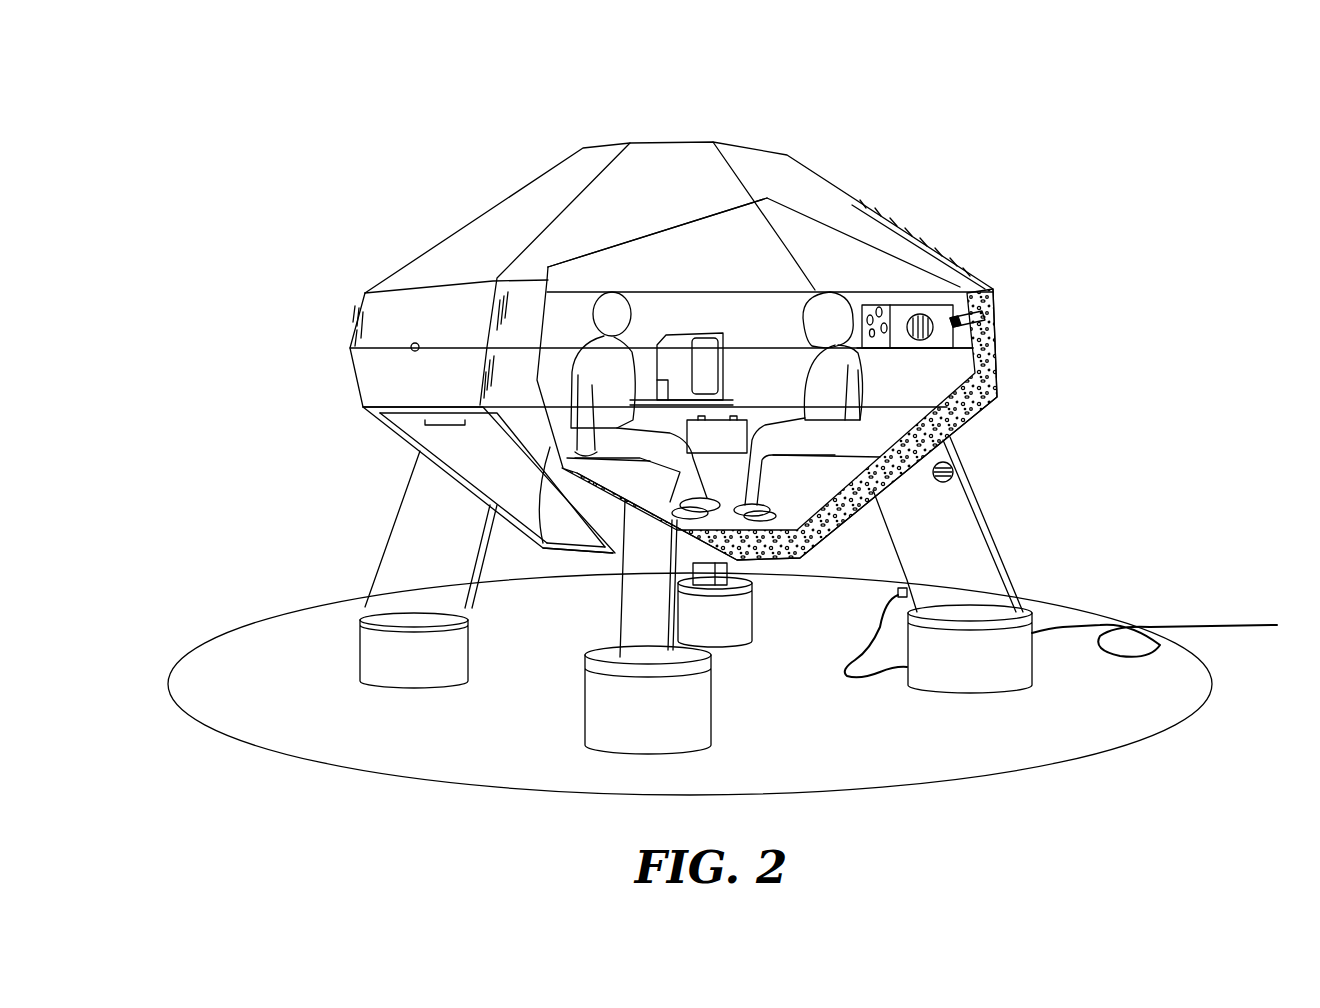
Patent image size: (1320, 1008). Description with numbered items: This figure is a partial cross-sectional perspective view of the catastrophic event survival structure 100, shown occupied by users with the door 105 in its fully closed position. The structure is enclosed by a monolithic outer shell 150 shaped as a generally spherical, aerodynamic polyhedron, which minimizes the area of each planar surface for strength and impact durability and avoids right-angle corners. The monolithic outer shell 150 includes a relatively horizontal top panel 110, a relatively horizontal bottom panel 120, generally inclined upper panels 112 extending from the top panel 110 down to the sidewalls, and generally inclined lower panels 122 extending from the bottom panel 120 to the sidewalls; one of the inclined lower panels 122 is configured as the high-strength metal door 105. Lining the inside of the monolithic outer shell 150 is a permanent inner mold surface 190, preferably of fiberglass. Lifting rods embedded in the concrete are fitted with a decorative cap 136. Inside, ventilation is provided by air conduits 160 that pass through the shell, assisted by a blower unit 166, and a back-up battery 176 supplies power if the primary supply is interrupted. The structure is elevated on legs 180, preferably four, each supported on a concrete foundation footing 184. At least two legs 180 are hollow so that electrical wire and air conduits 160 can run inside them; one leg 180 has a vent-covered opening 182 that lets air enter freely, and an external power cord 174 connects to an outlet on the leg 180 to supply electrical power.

The catastrophic event survival structure 100 is at (246, 195).
The door 105 is at (504, 468).
The top panel 110 is at (680, 140).
The inclined upper panels 112 is at (512, 205).
The bottom panel 120 is at (760, 558).
The inclined lower panels 122 is at (543, 547).
The decorative cap 136 is at (413, 352).
The monolithic outer shell 150 is at (962, 233).
The air conduits 160 is at (1000, 332).
The blower unit 166 is at (940, 313).
The power cord 174 is at (1197, 623).
The back-up battery 176 is at (700, 447).
The legs 180 is at (410, 517).
The vent-covered opening 182 is at (950, 480).
The foundation footing 184 is at (470, 650).
The permanent inner mold surface 190 is at (686, 259).